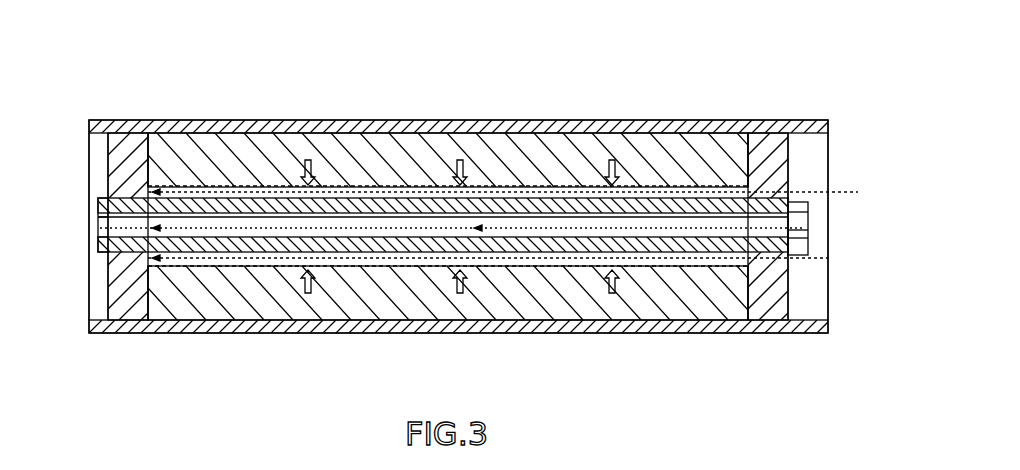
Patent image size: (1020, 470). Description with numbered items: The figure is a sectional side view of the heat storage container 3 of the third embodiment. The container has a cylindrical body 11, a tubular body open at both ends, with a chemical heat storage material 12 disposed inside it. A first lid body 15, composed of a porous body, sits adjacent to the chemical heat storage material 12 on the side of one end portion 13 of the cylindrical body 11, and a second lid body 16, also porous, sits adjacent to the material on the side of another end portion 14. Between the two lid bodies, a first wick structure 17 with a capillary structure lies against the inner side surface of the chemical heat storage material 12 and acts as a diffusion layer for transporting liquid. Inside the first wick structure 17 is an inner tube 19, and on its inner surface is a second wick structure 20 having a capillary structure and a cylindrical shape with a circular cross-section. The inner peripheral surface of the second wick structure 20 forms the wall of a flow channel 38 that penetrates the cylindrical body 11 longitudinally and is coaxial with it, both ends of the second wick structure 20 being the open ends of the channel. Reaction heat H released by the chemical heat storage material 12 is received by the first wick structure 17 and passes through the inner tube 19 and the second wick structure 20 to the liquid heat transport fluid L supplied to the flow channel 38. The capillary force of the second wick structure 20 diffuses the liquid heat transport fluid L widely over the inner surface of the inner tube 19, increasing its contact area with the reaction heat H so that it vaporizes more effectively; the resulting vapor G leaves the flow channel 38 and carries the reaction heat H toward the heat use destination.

The heat storage container 3 is at (504, 112).
The cylindrical body 11 is at (677, 121).
The chemical heat storage material 12 is at (562, 150).
The one end portion 13 is at (833, 151).
The another end portion 14 is at (88, 165).
The first lid body 15 is at (770, 150).
The second lid body 16 is at (132, 160).
The first wick structure 17 is at (234, 185).
The inner tube 19 is at (808, 203).
The second wick structure 20 is at (808, 214).
The flow channel 38 is at (88, 227).
The vapor of heat transport fluid G is at (398, 186).
The reaction heat H is at (308, 158).
The liquid heat transport fluid L is at (738, 192).